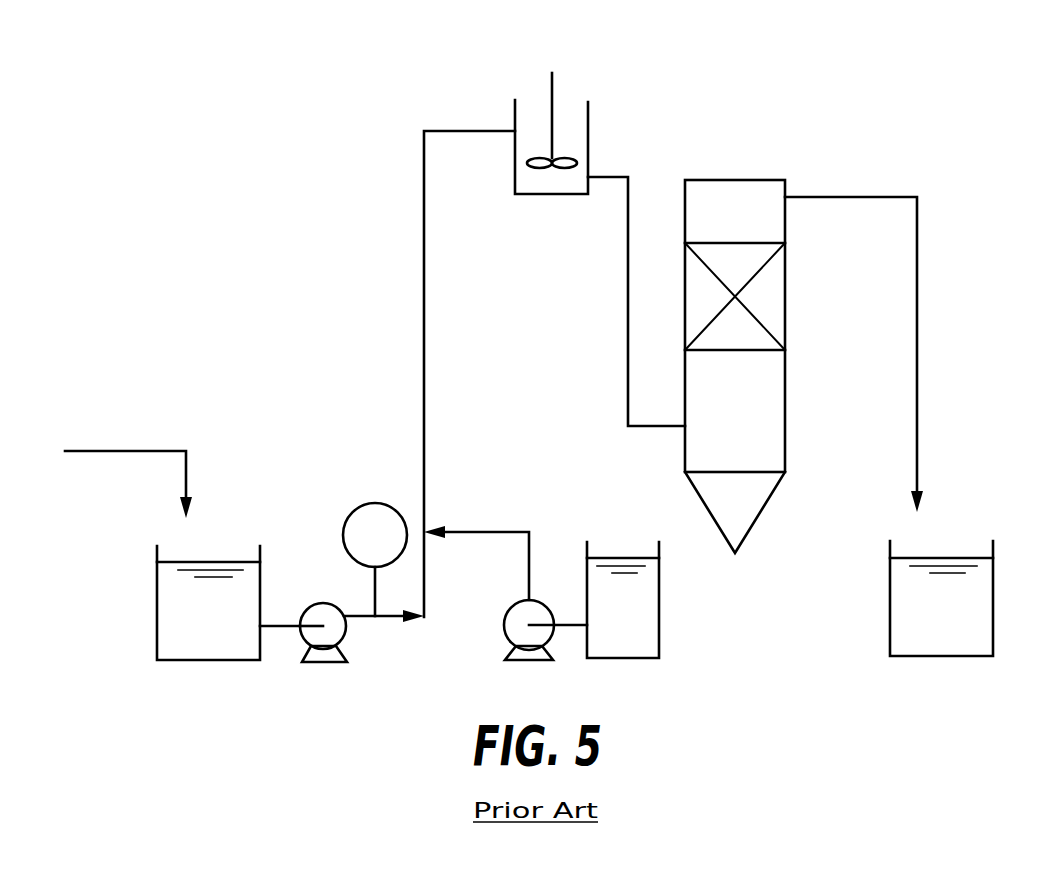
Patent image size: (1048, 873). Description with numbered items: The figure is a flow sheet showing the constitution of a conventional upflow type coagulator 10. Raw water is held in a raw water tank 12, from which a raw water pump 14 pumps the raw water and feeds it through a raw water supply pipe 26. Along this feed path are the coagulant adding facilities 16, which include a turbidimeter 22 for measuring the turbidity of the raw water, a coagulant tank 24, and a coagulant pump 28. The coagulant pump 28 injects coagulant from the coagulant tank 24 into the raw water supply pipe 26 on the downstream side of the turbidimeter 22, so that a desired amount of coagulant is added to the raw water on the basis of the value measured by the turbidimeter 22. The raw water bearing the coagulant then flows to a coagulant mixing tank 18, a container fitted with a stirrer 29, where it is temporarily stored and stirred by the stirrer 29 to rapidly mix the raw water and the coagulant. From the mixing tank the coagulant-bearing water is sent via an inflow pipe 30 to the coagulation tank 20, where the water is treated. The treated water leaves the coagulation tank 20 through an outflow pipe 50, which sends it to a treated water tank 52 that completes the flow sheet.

The upflow type coagulator 10 is at (758, 108).
The raw water tank 12 is at (157, 622).
The raw water pump 14 is at (346, 632).
The coagulant adding facilities 16 is at (585, 437).
The coagulant mixing tank 18 is at (588, 148).
The coagulation tank 20 is at (785, 390).
The turbidimeter 22 is at (375, 503).
The coagulant tank 24 is at (587, 545).
The raw water supply pipe 26 is at (424, 264).
The coagulant pump 28 is at (530, 600).
The stirrer 29 is at (552, 98).
The inflow pipe 30 is at (628, 320).
The outflow pipe 50 is at (853, 196).
The treated water tank 52 is at (890, 613).